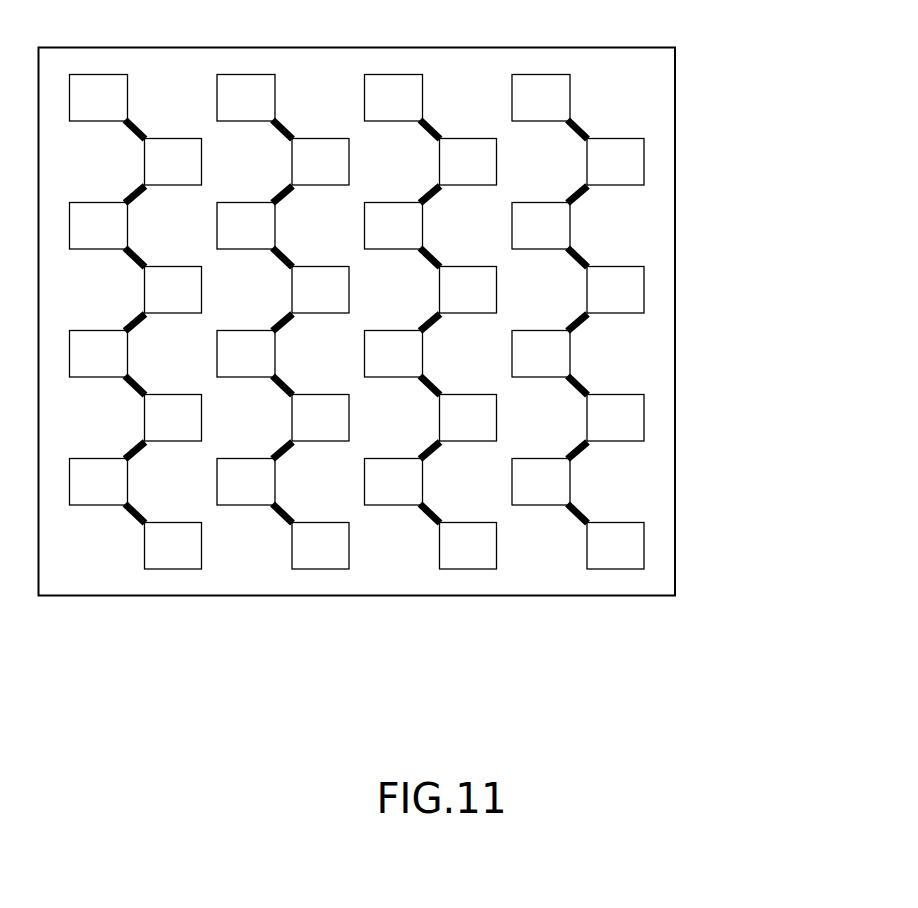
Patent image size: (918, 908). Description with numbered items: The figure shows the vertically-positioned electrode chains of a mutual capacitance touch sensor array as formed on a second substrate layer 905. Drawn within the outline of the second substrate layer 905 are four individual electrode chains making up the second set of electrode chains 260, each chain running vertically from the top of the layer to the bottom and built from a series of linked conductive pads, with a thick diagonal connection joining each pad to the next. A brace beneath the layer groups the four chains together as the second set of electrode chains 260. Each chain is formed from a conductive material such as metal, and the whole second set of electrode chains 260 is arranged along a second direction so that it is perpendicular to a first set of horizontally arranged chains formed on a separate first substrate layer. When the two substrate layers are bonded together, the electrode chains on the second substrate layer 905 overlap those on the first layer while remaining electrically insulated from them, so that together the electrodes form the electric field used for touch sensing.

The second substrate layer 905 is at (675, 80).
The second set of electrode chains 260 is at (357, 404).